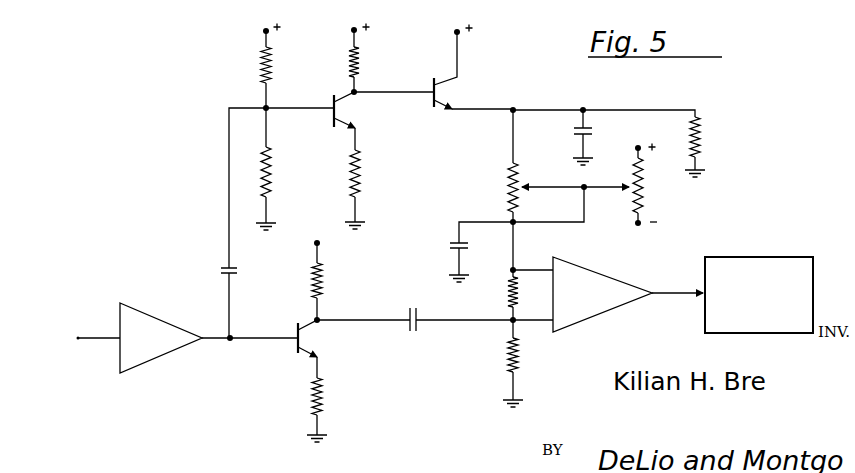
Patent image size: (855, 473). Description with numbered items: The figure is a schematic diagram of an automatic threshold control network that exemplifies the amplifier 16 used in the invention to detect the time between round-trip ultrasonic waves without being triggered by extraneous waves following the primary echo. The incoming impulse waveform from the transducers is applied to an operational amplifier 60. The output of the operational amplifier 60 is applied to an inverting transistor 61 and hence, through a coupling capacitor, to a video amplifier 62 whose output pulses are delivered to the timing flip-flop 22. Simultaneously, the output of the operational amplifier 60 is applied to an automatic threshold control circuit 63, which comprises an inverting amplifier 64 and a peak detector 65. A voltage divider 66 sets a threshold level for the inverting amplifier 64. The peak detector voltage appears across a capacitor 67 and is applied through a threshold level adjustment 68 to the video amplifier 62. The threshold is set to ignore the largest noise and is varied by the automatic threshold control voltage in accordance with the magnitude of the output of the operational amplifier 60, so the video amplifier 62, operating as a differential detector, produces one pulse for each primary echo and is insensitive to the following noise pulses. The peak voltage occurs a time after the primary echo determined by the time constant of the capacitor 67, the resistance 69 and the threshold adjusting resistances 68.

The amplifier 16 is at (443, 340).
The timing flip-flop 22 is at (762, 257).
The operational amplifier 60 is at (163, 320).
The inverting transistor 61 is at (312, 337).
The video amplifier 62 is at (617, 283).
The automatic threshold control circuit 63 is at (462, 137).
The inverting amplifier 64 is at (349, 108).
The peak detector 65 is at (483, 90).
The voltage divider 66 is at (228, 85).
The capacitor 67 is at (568, 130).
The threshold level adjustment 68 is at (593, 199).
The resistance 69 is at (697, 147).